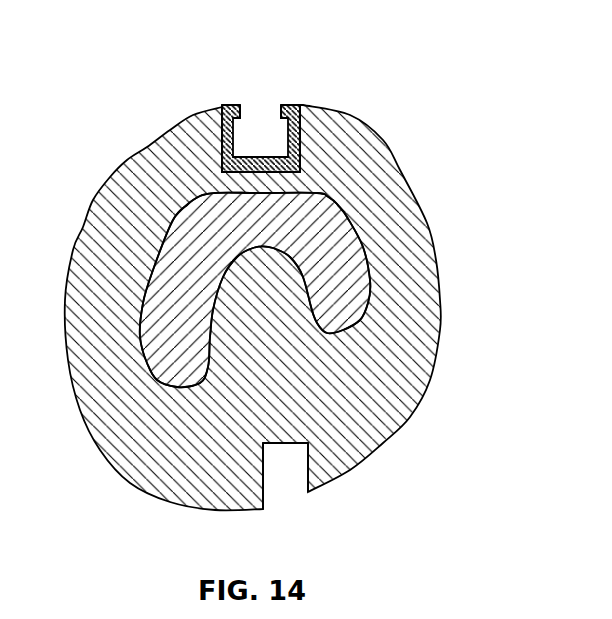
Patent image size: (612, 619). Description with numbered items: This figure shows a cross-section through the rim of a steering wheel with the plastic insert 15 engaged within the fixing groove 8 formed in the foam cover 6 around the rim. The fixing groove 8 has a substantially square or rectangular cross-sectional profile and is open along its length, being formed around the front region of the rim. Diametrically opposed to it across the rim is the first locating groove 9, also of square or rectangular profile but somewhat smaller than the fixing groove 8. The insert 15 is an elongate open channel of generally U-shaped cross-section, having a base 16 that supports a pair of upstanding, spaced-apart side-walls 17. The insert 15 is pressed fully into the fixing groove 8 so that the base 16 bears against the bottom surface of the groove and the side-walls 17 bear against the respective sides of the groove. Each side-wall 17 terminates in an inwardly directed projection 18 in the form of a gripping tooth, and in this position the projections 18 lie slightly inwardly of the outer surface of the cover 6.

The cover 6 is at (417, 263).
The fixing groove 8 is at (258, 132).
The first locating groove 9 is at (287, 488).
The plastic insert element 15 is at (300, 130).
The base 16 is at (222, 171).
The side-walls 17 is at (300, 157).
The inwardly directed projection 18 is at (279, 112).